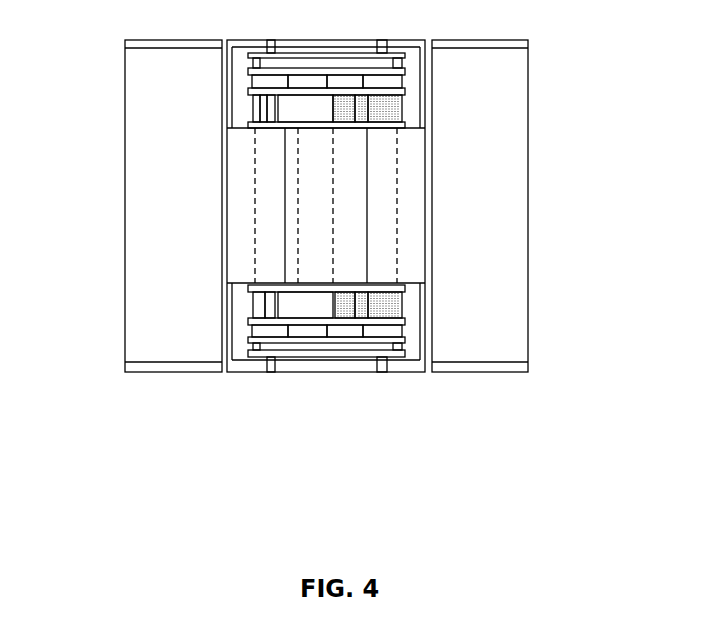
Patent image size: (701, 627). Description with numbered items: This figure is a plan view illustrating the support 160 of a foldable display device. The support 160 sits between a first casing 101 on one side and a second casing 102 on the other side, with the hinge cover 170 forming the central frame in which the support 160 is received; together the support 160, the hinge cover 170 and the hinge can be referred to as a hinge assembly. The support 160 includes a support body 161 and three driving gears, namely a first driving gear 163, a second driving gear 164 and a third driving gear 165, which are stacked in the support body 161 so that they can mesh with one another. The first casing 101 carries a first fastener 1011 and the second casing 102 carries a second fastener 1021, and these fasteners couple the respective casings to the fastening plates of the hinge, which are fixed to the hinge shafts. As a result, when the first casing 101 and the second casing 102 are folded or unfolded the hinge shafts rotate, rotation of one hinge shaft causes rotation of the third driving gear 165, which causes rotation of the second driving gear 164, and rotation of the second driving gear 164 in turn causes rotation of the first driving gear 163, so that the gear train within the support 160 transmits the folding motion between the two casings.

The first casing 101 is at (152, 331).
The first fastener 1011 is at (235, 158).
The second casing 102 is at (510, 322).
The second fastener 1021 is at (417, 158).
The support 160 is at (438, 434).
The support body 161 is at (326, 263).
The first driving gear 163 is at (345, 305).
The second driving gear 164 is at (362, 320).
The third driving gear 165 is at (385, 330).
The hinge cover 170 is at (238, 371).